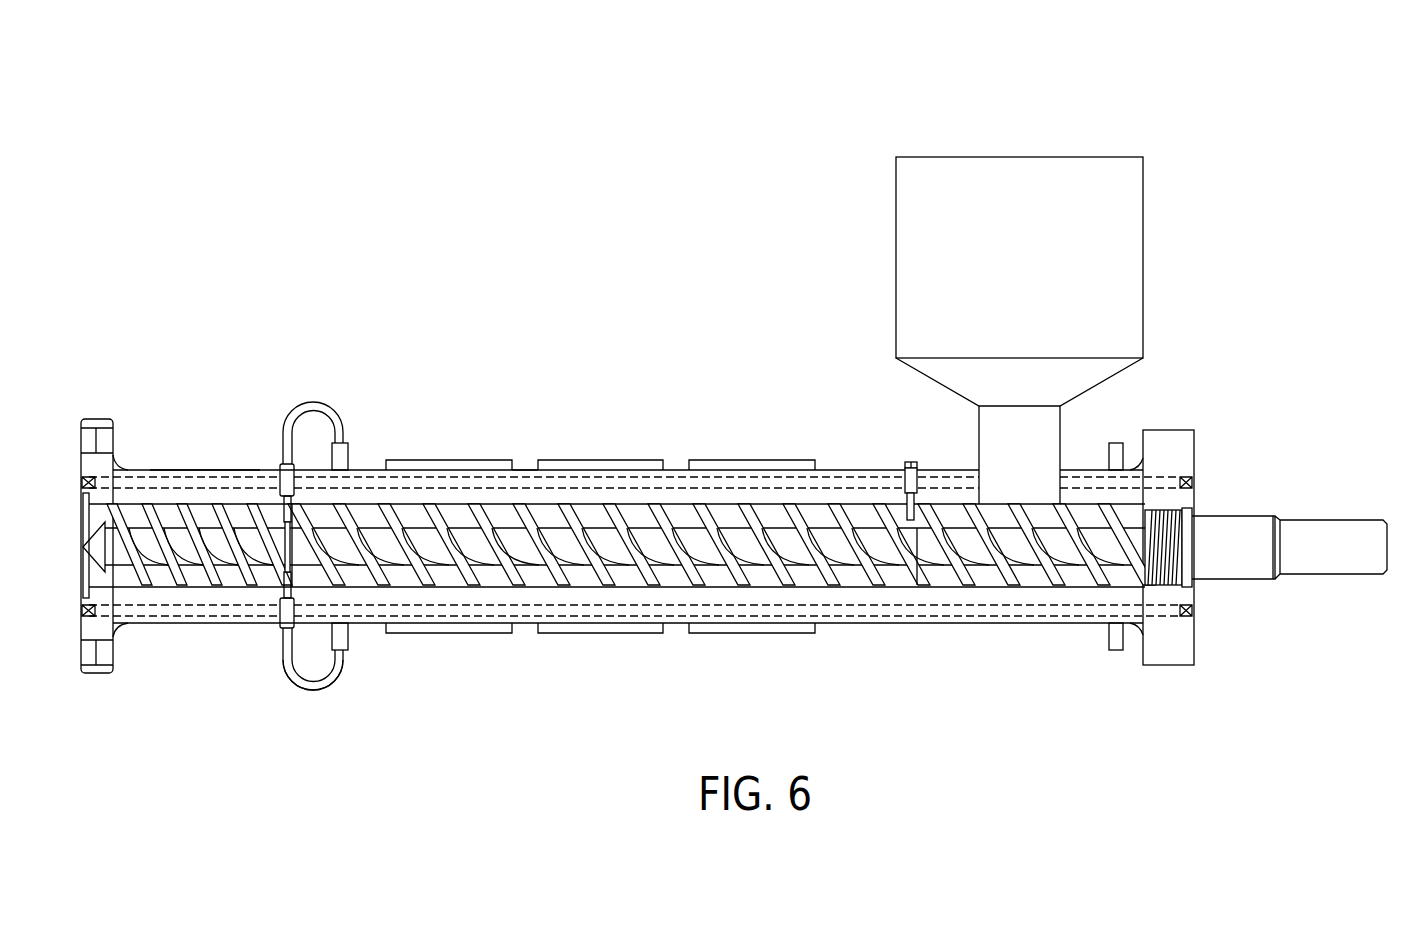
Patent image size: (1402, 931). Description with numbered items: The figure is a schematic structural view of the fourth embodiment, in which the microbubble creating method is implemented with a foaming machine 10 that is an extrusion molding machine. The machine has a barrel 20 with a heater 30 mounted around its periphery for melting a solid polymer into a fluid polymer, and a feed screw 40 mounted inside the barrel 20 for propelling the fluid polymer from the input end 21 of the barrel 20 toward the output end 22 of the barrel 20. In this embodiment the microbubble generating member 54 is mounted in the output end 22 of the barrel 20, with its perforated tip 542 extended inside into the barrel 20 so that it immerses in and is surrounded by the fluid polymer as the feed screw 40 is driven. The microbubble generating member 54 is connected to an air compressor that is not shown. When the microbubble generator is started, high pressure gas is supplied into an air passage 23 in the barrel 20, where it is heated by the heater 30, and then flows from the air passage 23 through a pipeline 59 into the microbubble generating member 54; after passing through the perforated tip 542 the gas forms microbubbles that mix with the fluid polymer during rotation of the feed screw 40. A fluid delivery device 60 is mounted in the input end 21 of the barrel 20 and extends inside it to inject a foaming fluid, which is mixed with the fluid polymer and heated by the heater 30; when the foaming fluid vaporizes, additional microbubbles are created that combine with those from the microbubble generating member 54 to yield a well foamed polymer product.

The foaming machine 10 is at (1270, 105).
The barrel 20 is at (178, 624).
The input end 21 is at (948, 468).
The output end 22 is at (205, 468).
The air passage 23 is at (518, 468).
The heater 30 is at (743, 462).
The feed screw 40 is at (132, 567).
The microbubble generating member 54 is at (280, 632).
The perforated tip 542 is at (282, 574).
The pipeline 59 is at (320, 692).
The fluid delivery device 60 is at (905, 461).